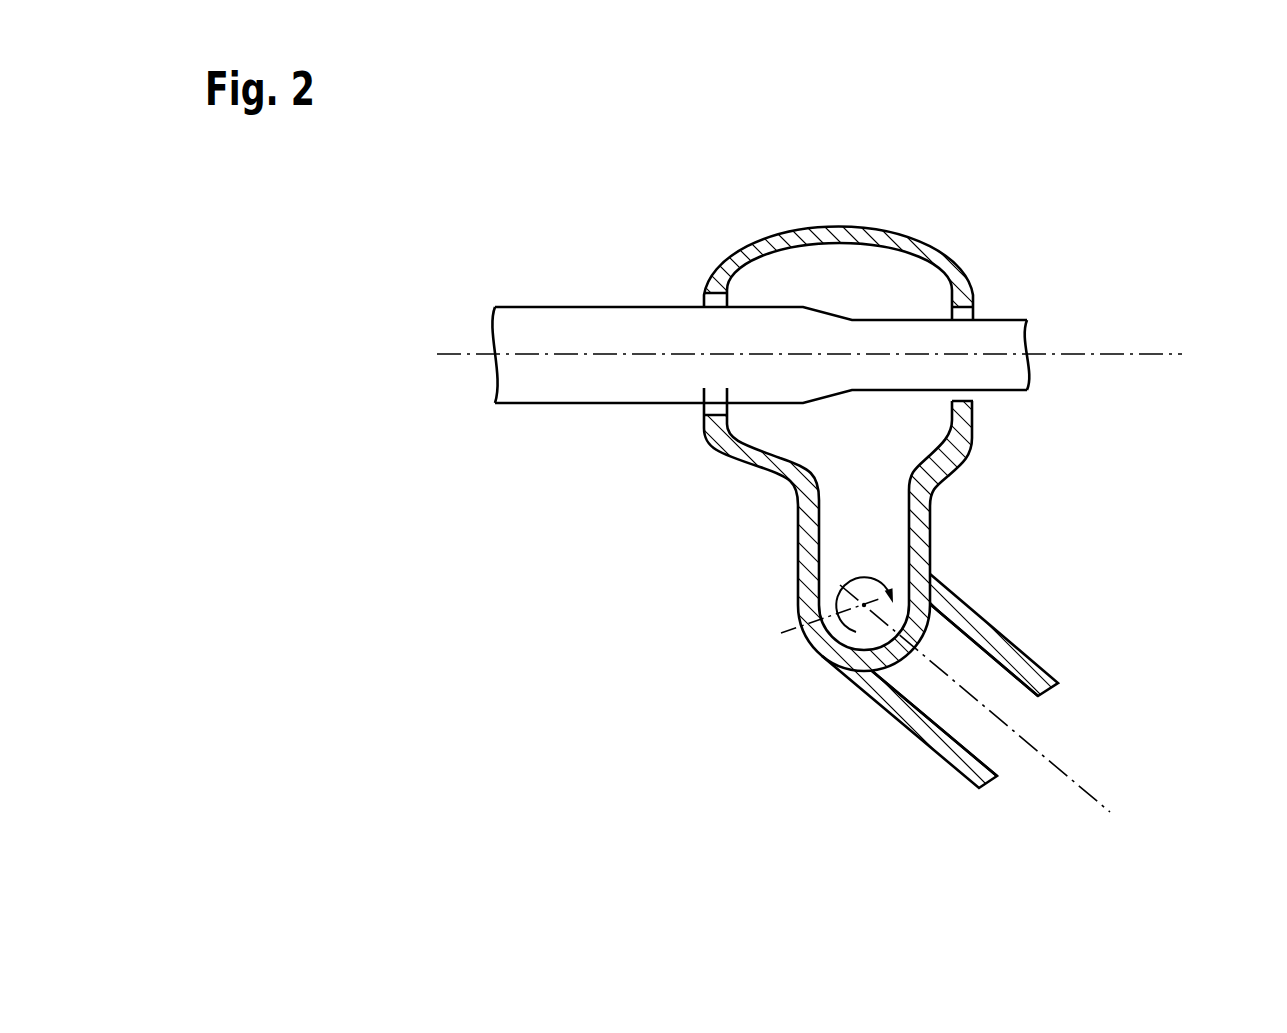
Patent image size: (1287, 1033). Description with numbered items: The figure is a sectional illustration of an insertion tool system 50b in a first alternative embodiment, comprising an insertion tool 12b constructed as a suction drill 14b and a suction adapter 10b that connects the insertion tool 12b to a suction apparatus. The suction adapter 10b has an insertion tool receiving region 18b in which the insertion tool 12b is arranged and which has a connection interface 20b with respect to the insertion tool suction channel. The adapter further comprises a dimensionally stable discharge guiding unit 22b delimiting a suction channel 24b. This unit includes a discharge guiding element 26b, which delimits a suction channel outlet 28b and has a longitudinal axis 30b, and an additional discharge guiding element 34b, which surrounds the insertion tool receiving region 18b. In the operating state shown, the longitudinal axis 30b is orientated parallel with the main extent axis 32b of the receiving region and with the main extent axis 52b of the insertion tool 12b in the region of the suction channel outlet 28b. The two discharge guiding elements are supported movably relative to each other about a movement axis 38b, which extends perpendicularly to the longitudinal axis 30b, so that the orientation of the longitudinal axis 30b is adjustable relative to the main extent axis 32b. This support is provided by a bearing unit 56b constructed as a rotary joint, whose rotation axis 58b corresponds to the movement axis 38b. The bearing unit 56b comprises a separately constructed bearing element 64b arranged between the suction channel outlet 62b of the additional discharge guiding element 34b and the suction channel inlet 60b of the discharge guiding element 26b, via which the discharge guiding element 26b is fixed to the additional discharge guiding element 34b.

The suction adapter 10b is at (681, 540).
The insertion tool 12b is at (816, 340).
The suction drill 14b is at (568, 317).
The insertion tool receiving region 18b is at (838, 237).
The connection interface 20b is at (805, 260).
The discharge guiding unit 22b is at (676, 477).
The suction channel 24b is at (936, 706).
The discharge guiding element 26b is at (970, 779).
The suction channel outlet 28b is at (1011, 696).
The longitudinal axis 30b is at (1110, 810).
The main extent axis 32b is at (816, 409).
The additional discharge guiding element 34b is at (779, 473).
The movement axis 38b is at (771, 629).
The insertion tool system 50b is at (561, 635).
The main extent axis 52b is at (1142, 357).
The bearing unit 56b is at (814, 674).
The rotation axis 58b is at (783, 632).
The suction channel inlet 60b is at (968, 585).
The suction channel outlet 62b is at (894, 556).
The bearing element 64b is at (855, 562).